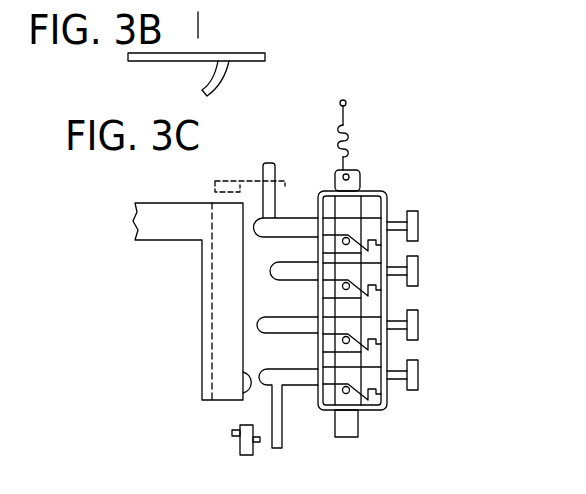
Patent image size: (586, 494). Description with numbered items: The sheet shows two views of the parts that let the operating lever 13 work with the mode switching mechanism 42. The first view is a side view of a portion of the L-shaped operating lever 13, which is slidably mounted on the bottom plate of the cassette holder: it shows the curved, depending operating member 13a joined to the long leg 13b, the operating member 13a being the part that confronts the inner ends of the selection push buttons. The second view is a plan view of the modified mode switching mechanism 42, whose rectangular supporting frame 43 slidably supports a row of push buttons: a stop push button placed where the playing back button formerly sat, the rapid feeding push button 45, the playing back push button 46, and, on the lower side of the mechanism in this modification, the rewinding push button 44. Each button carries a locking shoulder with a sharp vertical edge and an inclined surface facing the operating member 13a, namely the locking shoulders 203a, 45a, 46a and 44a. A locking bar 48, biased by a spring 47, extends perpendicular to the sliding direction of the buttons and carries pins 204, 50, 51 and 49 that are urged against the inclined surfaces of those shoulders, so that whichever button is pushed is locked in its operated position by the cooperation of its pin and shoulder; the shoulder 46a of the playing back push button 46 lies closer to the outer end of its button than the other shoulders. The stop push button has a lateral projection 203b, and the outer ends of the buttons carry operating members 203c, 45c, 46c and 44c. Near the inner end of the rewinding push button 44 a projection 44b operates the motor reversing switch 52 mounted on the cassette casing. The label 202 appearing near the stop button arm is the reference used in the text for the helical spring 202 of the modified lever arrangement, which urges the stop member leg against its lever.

In FIG. 3C, the operating lever 13 is at (168, 210).
In FIG. 3B, the operating member 13a is at (223, 80).
In FIG. 3C, the operating member 13a is at (239, 388).
In FIG. 3B, the long leg 13b is at (165, 62).
In FIG. 3C, the mode switching mechanism 42 is at (430, 200).
In FIG. 3C, the supporting frame 43 is at (382, 192).
In FIG. 3C, the rewinding push button 44 is at (300, 380).
In FIG. 3C, the shoulder 44a is at (373, 395).
In FIG. 3C, the projection 44b is at (280, 445).
In FIG. 3C, the operating member 44c is at (418, 375).
In FIG. 3C, the rapid feeding push button 45 is at (275, 272).
In FIG. 3C, the shoulder 45a is at (376, 288).
In FIG. 3C, the operating member 45c is at (418, 272).
In FIG. 3B, the playing back push button 46 is at (250, 52).
In FIG. 3C, the playing back push button 46 is at (261, 327).
In FIG. 3C, the shoulder 46a is at (376, 338).
In FIG. 3C, the operating member 46c is at (418, 325).
In FIG. 3C, the spring 47 is at (350, 128).
In FIG. 3C, the locking bar 48 is at (352, 176).
In FIG. 3C, the pin 49 is at (349, 392).
In FIG. 3C, the pin 50 is at (342, 288).
In FIG. 3C, the pin 51 is at (342, 342).
In FIG. 3C, the motor reversing switch 52 is at (245, 452).
In FIG. 3C, the helical spring 202 is at (282, 226).
In FIG. 3C, the locking shoulder 203a is at (376, 239).
In FIG. 3C, the lateral projection 203b is at (270, 163).
In FIG. 3C, the terminal 203c is at (418, 225).
In FIG. 3C, the pin 204 is at (342, 243).